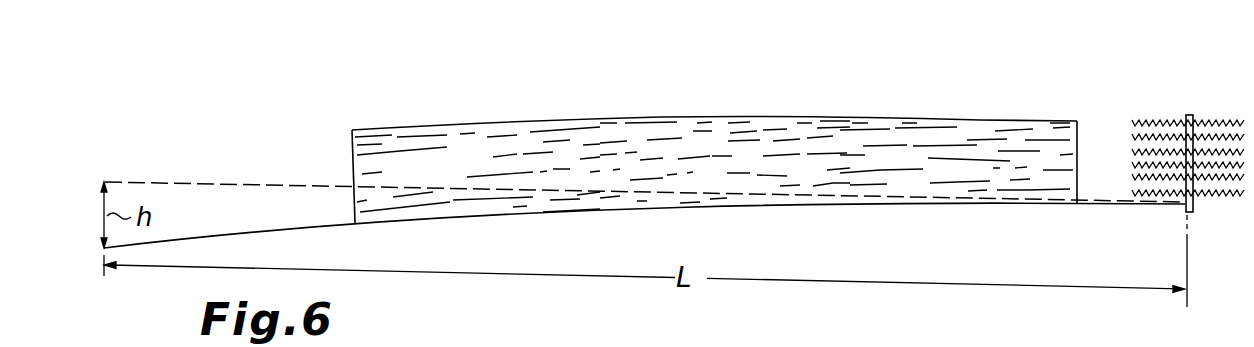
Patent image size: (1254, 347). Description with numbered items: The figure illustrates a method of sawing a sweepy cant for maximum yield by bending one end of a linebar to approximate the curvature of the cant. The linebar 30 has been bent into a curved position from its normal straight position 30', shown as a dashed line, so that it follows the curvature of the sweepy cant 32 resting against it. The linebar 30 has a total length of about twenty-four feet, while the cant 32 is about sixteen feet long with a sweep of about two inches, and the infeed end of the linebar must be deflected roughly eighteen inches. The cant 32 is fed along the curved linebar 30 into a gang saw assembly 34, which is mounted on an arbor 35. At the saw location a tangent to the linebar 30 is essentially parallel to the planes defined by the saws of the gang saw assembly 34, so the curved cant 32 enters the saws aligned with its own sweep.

The linebar 30 is at (644, 236).
The normal straight position of the linebar 30' is at (645, 169).
The sweepy cant 32 is at (483, 170).
The gang saw assembly 34 is at (1175, 109).
The arbor 35 is at (1195, 205).